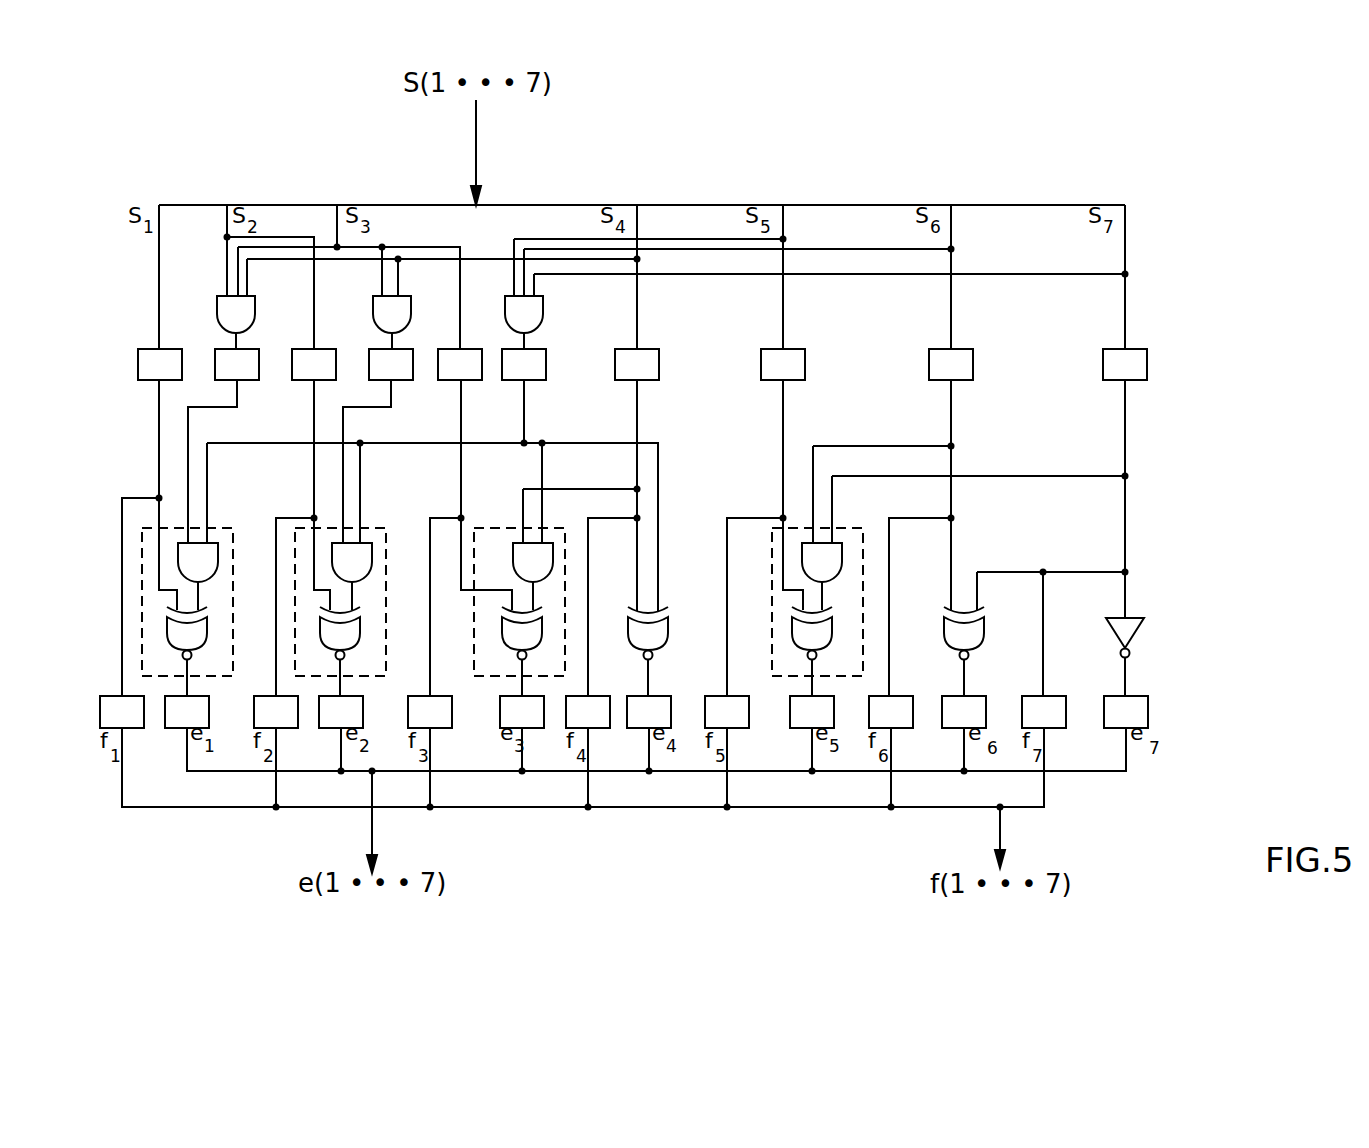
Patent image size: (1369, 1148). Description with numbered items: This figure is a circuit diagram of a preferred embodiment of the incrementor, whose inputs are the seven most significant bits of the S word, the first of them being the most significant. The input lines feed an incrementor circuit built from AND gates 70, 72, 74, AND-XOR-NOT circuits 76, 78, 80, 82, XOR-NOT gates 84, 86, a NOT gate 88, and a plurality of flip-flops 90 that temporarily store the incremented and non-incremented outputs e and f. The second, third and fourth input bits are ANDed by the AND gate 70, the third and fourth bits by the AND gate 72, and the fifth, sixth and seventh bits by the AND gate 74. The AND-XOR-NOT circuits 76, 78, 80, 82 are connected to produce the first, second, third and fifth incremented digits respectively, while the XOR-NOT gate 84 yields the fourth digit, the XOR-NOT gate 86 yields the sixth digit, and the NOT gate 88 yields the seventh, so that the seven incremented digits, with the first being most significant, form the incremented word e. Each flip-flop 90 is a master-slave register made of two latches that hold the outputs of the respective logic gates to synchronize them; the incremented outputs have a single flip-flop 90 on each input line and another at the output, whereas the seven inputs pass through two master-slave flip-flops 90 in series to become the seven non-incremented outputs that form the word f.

The AND gate 70 is at (255, 323).
The AND gate 72 is at (411, 323).
The AND gate 74 is at (543, 323).
The AND-XOR-NOT circuit 76 is at (237, 541).
The AND-XOR-NOT circuit 78 is at (397, 541).
The AND-XOR-NOT circuit 80 is at (512, 522).
The AND-XOR-NOT circuit 82 is at (870, 541).
The XOR-NOT gate 84 is at (668, 637).
The XOR-NOT gate 86 is at (984, 643).
The NOT gate 88 is at (1144, 638).
The flip-flop 90 is at (215, 363).